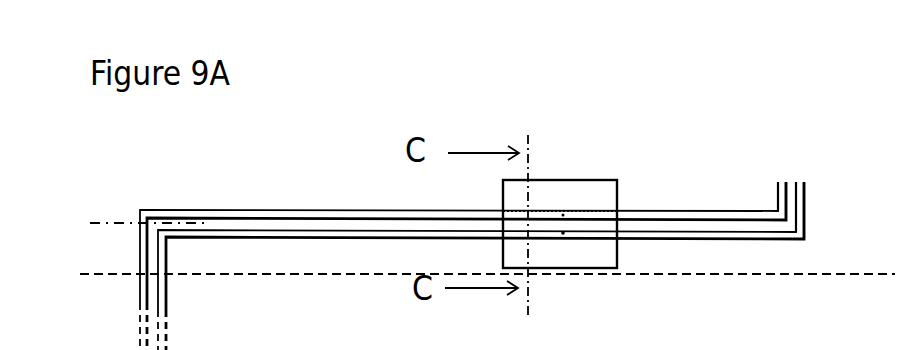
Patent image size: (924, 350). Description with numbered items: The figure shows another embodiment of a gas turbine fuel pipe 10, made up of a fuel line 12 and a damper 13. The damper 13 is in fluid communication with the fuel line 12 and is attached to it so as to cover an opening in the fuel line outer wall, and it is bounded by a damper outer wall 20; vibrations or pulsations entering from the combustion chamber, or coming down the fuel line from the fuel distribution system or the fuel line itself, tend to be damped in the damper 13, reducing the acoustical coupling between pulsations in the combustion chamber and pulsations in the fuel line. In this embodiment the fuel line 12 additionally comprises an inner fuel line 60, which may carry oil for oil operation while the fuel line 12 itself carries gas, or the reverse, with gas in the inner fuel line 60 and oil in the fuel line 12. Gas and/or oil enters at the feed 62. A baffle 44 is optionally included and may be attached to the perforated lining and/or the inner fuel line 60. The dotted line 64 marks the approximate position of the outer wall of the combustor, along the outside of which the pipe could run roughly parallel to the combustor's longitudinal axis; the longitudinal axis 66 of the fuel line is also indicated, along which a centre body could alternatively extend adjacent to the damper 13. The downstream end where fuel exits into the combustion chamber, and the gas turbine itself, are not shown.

The gas turbine fuel pipe 10 is at (394, 106).
The fuel line 12 is at (285, 191).
The damper 13 is at (572, 145).
The baffle 44 is at (563, 215).
The inner fuel line 60 is at (710, 213).
The feed 62 is at (792, 93).
The dotted line 64 is at (265, 273).
The longitudinal axis 66 is at (115, 220).
The damper outer wall 20 is at (860, 312).